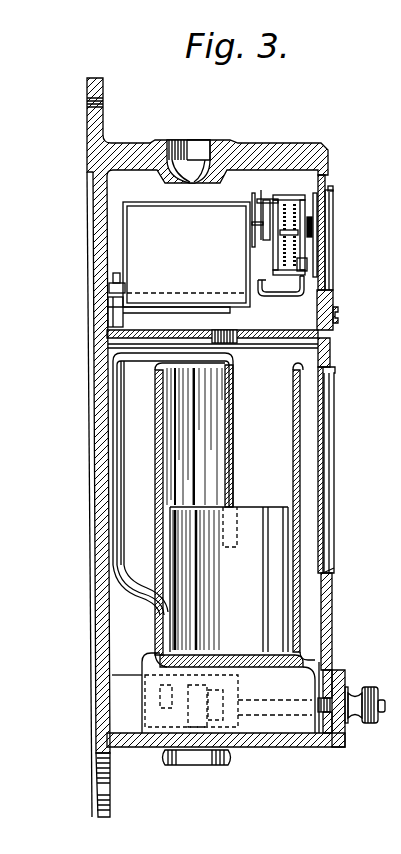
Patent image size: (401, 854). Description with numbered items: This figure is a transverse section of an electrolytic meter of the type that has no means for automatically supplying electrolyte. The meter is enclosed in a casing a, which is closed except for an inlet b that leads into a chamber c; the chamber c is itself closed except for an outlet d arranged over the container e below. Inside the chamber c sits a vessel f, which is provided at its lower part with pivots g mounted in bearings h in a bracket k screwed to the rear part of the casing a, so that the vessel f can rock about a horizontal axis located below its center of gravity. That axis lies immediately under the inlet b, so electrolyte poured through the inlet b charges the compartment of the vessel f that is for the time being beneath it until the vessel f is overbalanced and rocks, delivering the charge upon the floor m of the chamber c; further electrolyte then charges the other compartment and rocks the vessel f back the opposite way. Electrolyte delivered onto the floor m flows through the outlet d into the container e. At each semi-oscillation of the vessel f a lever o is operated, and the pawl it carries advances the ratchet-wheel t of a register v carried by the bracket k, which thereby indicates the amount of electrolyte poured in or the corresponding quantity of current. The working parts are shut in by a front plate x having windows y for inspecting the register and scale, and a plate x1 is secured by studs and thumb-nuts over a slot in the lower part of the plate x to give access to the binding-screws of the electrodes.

The casing a is at (101, 574).
The inlet b is at (197, 160).
The chamber c is at (212, 256).
The outlet d is at (240, 339).
The container e is at (226, 559).
The vessel f is at (186, 257).
The pivots g is at (104, 291).
The bearings h is at (102, 304).
The bracket k is at (120, 306).
The floor m is at (102, 356).
The lever o is at (274, 196).
The ratchet-wheel t is at (268, 233).
The register v is at (306, 251).
The front plate x is at (333, 595).
The plate x1 is at (351, 721).
The windows y is at (335, 406).